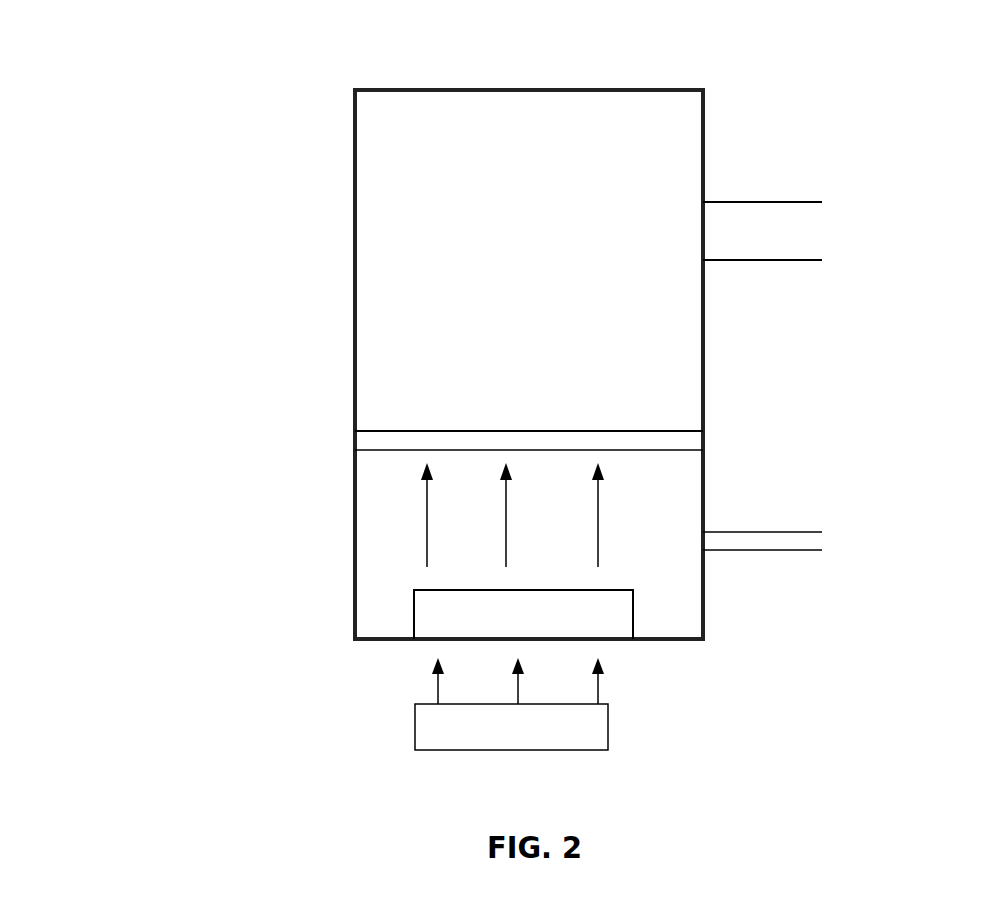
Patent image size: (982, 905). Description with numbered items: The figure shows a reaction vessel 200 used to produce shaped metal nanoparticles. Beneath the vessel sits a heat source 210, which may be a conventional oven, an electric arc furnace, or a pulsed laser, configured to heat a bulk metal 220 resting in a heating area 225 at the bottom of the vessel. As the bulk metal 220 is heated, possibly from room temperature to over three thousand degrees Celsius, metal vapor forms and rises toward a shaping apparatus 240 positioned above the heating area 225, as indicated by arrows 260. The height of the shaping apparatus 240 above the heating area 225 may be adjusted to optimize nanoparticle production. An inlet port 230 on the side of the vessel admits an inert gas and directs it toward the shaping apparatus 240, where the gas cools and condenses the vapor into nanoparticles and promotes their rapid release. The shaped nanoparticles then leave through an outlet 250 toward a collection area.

The reaction vessel 200 is at (292, 85).
The heat source 210 is at (415, 725).
The bulk metal 220 is at (608, 623).
The heating area 225 is at (369, 626).
The inlet port 230 is at (780, 544).
The shaping apparatus 240 is at (370, 431).
The outlet 250 is at (780, 260).
The arrows 260 is at (392, 509).